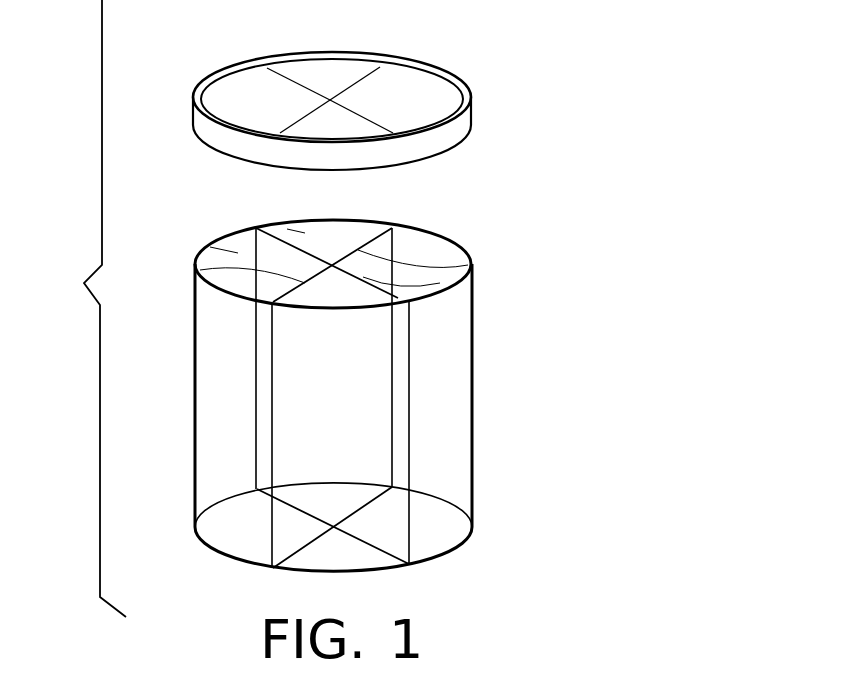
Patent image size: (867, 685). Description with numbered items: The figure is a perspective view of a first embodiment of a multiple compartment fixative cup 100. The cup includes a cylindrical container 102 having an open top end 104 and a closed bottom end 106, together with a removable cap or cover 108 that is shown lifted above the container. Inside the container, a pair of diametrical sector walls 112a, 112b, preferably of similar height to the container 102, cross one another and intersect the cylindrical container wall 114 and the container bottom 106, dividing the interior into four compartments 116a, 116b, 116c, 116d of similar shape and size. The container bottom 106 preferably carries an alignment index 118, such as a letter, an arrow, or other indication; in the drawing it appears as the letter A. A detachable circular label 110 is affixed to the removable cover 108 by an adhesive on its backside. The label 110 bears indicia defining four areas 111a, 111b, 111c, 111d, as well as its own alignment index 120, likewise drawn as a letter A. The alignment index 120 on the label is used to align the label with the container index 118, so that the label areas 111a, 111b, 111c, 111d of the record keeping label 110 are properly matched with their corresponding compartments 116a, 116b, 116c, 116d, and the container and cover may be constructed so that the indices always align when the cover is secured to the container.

The multiple compartment fixative cup 100 is at (60, 301).
The cylindrical container 102 is at (367, 398).
The open top end 104 is at (440, 240).
The closed bottom end 106 is at (455, 548).
The removable cap or cover 108 is at (355, 104).
The detachable circular label 110 is at (352, 68).
The label area 111a is at (218, 100).
The label area 111b is at (325, 67).
The label area 111c is at (415, 82).
The label area 111d is at (353, 127).
The diametrical sector wall 112a is at (470, 264).
The diametrical sector wall 112b is at (455, 285).
The cylindrical container wall 114 is at (192, 448).
The compartment 116a is at (200, 252).
The compartment 116b is at (268, 222).
The compartment 116c is at (380, 231).
The compartment 116d is at (197, 278).
The alignment index 118 is at (270, 550).
The alignment index 120 is at (262, 90).